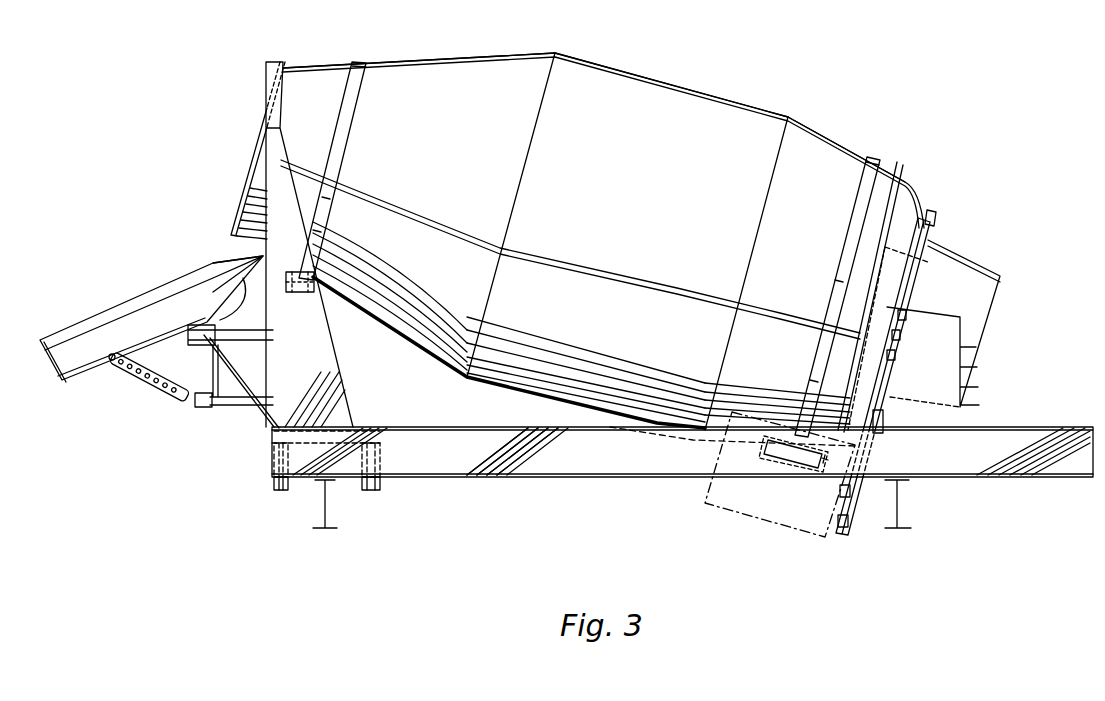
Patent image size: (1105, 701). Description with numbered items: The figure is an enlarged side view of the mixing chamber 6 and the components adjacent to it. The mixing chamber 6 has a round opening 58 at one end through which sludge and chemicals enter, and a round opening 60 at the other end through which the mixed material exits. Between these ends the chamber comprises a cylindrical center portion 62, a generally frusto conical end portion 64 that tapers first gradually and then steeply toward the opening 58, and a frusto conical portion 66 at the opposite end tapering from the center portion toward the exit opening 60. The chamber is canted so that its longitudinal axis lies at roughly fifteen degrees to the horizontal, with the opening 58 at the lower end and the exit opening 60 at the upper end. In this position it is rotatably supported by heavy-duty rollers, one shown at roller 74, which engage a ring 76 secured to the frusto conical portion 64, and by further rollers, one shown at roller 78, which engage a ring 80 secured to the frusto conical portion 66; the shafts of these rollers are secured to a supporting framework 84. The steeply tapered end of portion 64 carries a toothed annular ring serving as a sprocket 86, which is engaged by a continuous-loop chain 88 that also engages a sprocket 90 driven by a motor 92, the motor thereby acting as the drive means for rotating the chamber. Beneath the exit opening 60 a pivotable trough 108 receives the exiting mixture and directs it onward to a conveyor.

The mixing chamber 6 is at (738, 100).
The round opening 58 is at (926, 259).
The round opening 60 is at (263, 150).
The cylindrical center portion 62 is at (650, 77).
The frusto conical end portion 64 is at (812, 131).
The frusto conical portion 66 is at (482, 52).
The roller 74 is at (822, 472).
The ring 76 is at (877, 157).
The roller 78 is at (313, 296).
The ring 80 is at (358, 60).
The supporting framework 84 is at (327, 366).
The sprocket 86 is at (933, 214).
The chain 88 is at (868, 440).
The sprocket 90 is at (848, 538).
The motor 92 is at (773, 512).
The trough 108 is at (140, 296).